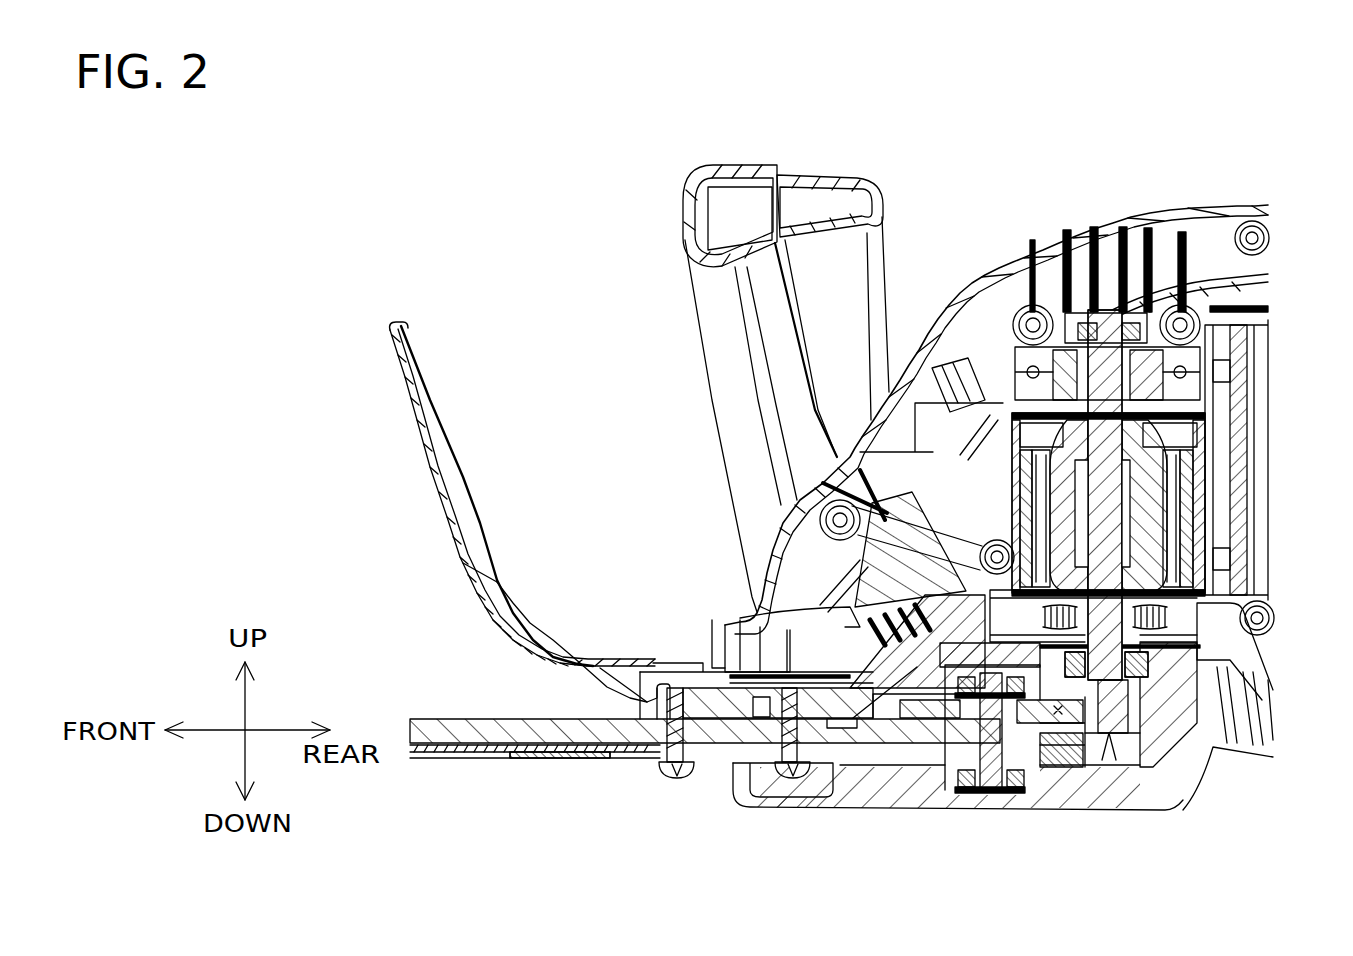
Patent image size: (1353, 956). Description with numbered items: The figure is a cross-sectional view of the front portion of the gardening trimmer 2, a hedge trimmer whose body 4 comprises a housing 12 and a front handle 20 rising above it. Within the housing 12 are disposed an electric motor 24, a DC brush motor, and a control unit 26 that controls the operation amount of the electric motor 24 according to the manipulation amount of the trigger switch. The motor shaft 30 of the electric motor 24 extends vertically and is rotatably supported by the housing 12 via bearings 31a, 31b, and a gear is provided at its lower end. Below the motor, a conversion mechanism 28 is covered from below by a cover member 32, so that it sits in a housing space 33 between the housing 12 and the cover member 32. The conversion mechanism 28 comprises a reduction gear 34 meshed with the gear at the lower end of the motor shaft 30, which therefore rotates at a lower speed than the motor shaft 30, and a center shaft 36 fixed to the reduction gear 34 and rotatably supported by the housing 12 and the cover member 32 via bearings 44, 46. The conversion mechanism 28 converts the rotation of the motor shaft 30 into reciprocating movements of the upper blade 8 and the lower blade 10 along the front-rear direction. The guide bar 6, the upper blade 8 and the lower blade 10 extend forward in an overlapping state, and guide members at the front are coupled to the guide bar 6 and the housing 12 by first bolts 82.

The gardening trimmer 2 is at (270, 331).
The body 4 is at (1167, 168).
The guide bar 6 is at (496, 718).
The upper blade 8 is at (467, 749).
The lower blade 10 is at (568, 758).
The housing 12 is at (950, 293).
The front handle 20 is at (707, 345).
The electric motor 24 is at (995, 365).
The control unit 26 is at (1240, 420).
The conversion mechanism 28 is at (1093, 762).
The motor shaft 30 is at (1113, 505).
The bearing 31a is at (1080, 318).
The bearing 31b is at (1093, 760).
The cover member 32 is at (1060, 800).
The housing space 33 is at (1047, 773).
The reduction gear 34 is at (918, 770).
The center shaft 36 is at (988, 775).
The bearing 44 is at (767, 605).
The bearing 46 is at (970, 790).
The first bolt 82 is at (790, 765).